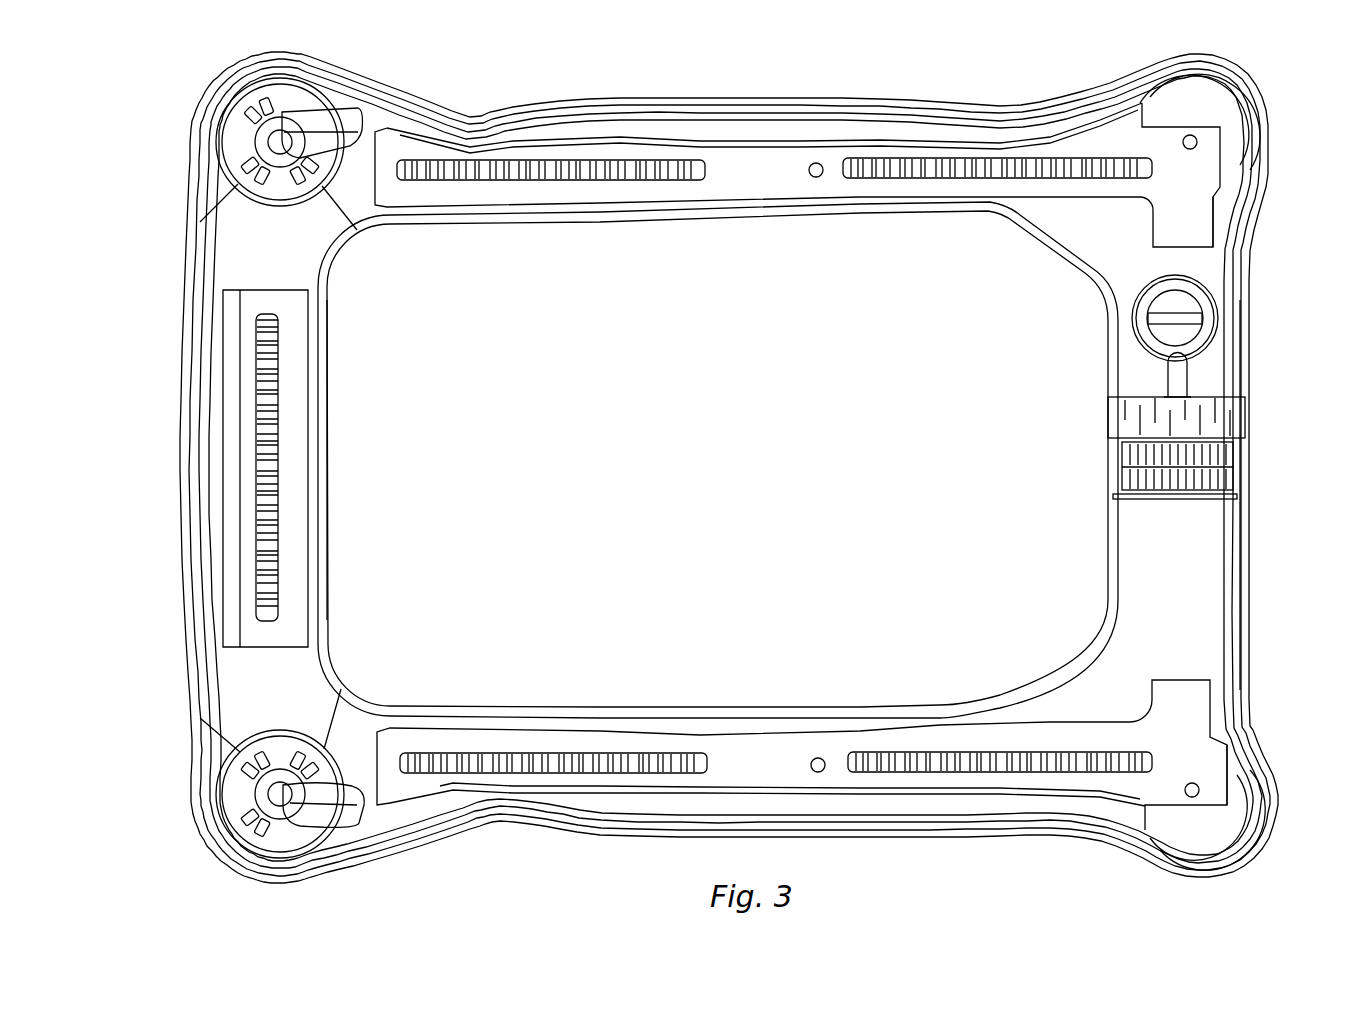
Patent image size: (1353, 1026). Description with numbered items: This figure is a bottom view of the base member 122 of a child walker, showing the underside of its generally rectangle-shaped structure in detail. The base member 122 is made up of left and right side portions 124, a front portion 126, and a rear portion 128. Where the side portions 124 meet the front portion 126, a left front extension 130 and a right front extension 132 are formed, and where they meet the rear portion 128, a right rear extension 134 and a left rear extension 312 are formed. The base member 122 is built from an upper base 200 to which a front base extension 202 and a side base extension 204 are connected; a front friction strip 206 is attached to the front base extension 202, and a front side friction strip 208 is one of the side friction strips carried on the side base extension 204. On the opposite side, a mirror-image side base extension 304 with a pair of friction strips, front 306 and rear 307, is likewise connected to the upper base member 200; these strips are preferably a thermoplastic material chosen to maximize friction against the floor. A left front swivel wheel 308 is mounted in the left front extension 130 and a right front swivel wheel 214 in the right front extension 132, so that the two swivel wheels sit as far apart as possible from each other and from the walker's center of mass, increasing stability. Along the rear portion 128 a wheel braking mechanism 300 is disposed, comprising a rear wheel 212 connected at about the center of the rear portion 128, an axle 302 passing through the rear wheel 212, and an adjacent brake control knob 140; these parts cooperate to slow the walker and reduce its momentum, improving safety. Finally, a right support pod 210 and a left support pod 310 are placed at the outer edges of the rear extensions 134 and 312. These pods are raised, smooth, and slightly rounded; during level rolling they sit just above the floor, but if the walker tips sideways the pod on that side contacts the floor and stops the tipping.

The base member 122 is at (570, 864).
The side portions 124 is at (797, 218).
The front portion 126 is at (323, 540).
The rear portion 128 is at (1250, 545).
The left front extension 130 is at (185, 150).
The right front extension 132 is at (210, 850).
The right rear extension 134 is at (1250, 740).
The brake control knob 140 is at (1212, 300).
The upper base 200 is at (355, 690).
The front base extension 202 is at (298, 322).
The side base extension 204 is at (553, 729).
The front friction strip 206 is at (276, 432).
The front side friction strip 208 is at (650, 755).
The right support pod 210 is at (1180, 843).
The rear wheel 212 is at (1240, 460).
The right front swivel wheel 214 is at (355, 825).
The wheel braking mechanism 300 is at (1050, 452).
The axle 302 is at (1165, 380).
The side base extension 304 is at (487, 208).
The front friction strip 306 is at (634, 181).
The rear friction strip 307 is at (942, 180).
The left front swivel wheel 308 is at (355, 110).
The left support pod 310 is at (1232, 104).
The left rear extension 312 is at (1250, 190).